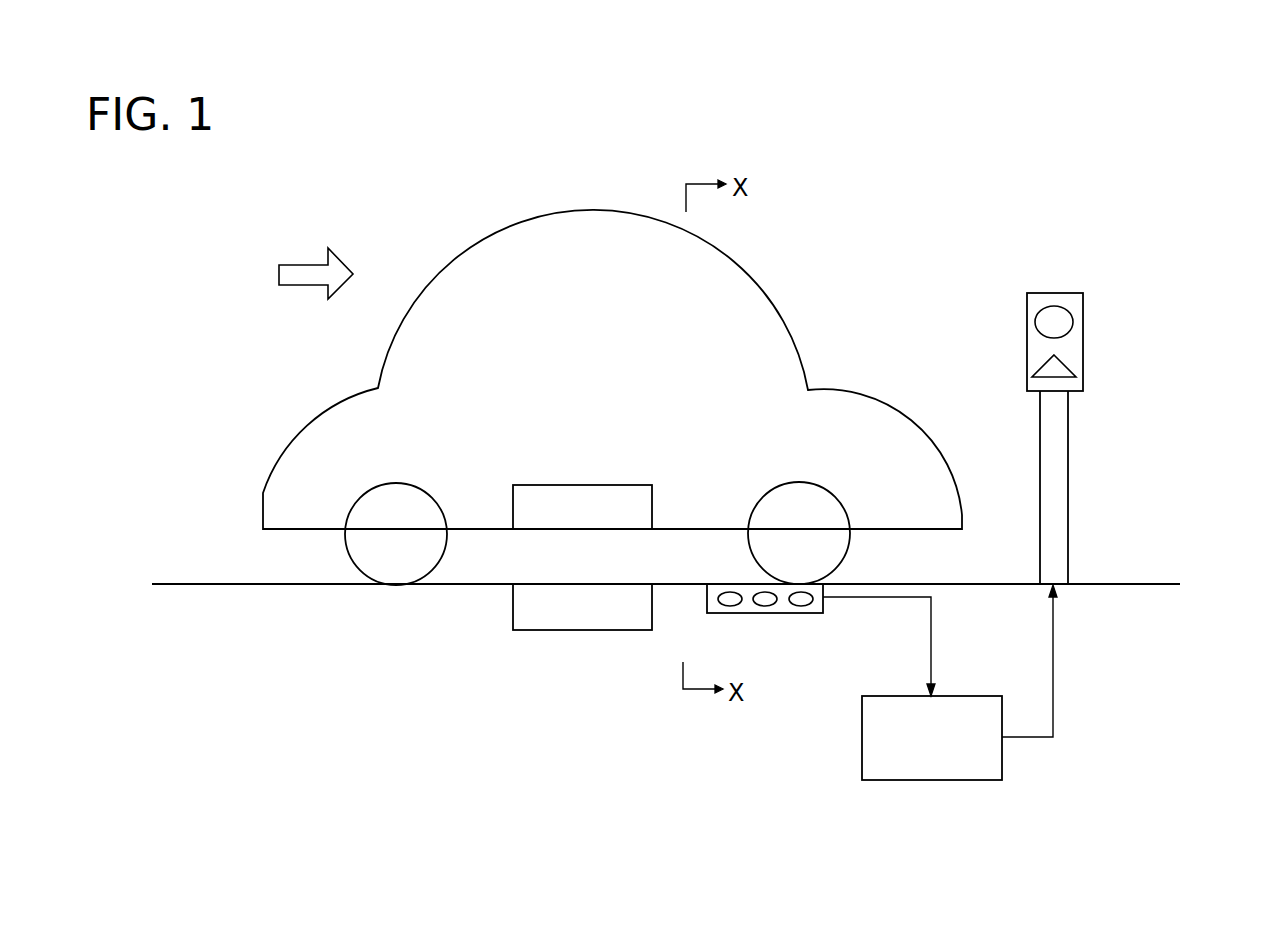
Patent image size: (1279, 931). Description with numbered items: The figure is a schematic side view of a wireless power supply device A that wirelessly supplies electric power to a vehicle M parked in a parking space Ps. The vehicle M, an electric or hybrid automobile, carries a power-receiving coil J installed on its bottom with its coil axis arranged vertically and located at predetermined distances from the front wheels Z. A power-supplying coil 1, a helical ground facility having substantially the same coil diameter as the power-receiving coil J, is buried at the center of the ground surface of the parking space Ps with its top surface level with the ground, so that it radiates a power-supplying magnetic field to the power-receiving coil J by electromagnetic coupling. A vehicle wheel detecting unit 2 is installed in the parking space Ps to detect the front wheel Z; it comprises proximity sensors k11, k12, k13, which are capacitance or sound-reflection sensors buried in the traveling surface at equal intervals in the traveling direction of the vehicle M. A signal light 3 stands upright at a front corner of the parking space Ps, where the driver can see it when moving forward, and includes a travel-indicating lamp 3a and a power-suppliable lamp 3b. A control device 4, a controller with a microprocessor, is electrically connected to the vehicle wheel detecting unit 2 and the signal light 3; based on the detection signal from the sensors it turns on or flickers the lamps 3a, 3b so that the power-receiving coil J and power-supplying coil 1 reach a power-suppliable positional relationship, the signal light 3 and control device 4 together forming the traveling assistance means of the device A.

The vehicle M is at (463, 243).
The power-receiving coil J is at (582, 483).
The front wheel Z is at (813, 483).
The parking space Ps is at (222, 583).
The power-supplying coil 1 is at (583, 630).
The vehicle wheel detecting unit 2 is at (705, 602).
The proximity sensor k11 is at (730, 607).
The proximity sensor k12 is at (766, 607).
The proximity sensor k13 is at (803, 607).
The signal light 3 is at (1083, 408).
The travel-indicating lamp 3a is at (1073, 370).
The power-suppliable lamp 3b is at (1073, 320).
The control device 4 is at (963, 696).
The wireless power supply device A is at (1098, 740).